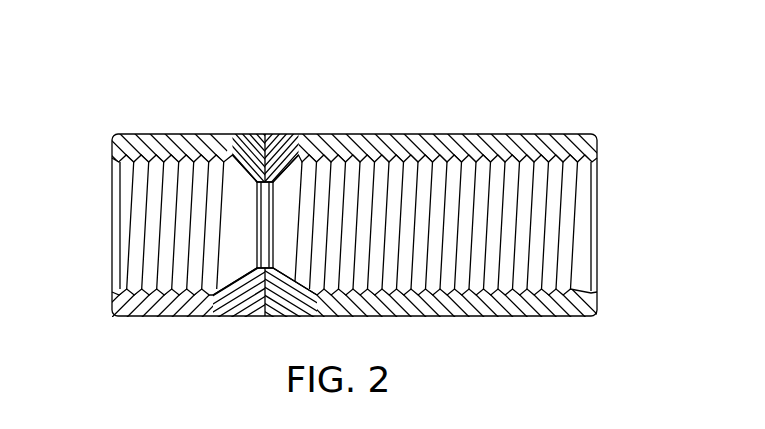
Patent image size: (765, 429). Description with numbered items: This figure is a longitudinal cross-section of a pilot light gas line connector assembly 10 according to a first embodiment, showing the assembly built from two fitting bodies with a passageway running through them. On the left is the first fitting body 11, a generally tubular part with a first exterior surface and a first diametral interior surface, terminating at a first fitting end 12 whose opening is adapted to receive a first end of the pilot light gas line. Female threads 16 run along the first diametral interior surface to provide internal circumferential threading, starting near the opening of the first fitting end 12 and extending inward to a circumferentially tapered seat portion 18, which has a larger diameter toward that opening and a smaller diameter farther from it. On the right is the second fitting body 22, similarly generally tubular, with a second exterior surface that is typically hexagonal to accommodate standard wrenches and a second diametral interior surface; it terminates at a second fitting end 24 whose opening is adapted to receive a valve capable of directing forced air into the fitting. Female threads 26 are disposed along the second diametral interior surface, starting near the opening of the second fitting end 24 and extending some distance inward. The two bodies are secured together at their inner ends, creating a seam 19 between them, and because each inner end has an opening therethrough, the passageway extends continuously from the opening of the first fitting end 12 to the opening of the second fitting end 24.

The pilot light gas line connector assembly 10 is at (528, 62).
The first fitting body 11 is at (180, 134).
The first fitting end 12 is at (105, 239).
The female threads 16 is at (148, 163).
The circumferentially tapered seat portion 18 is at (246, 290).
The seam 19 is at (266, 134).
The second fitting body 22 is at (460, 134).
The second fitting end 24 is at (608, 229).
The female threads 26 is at (553, 165).